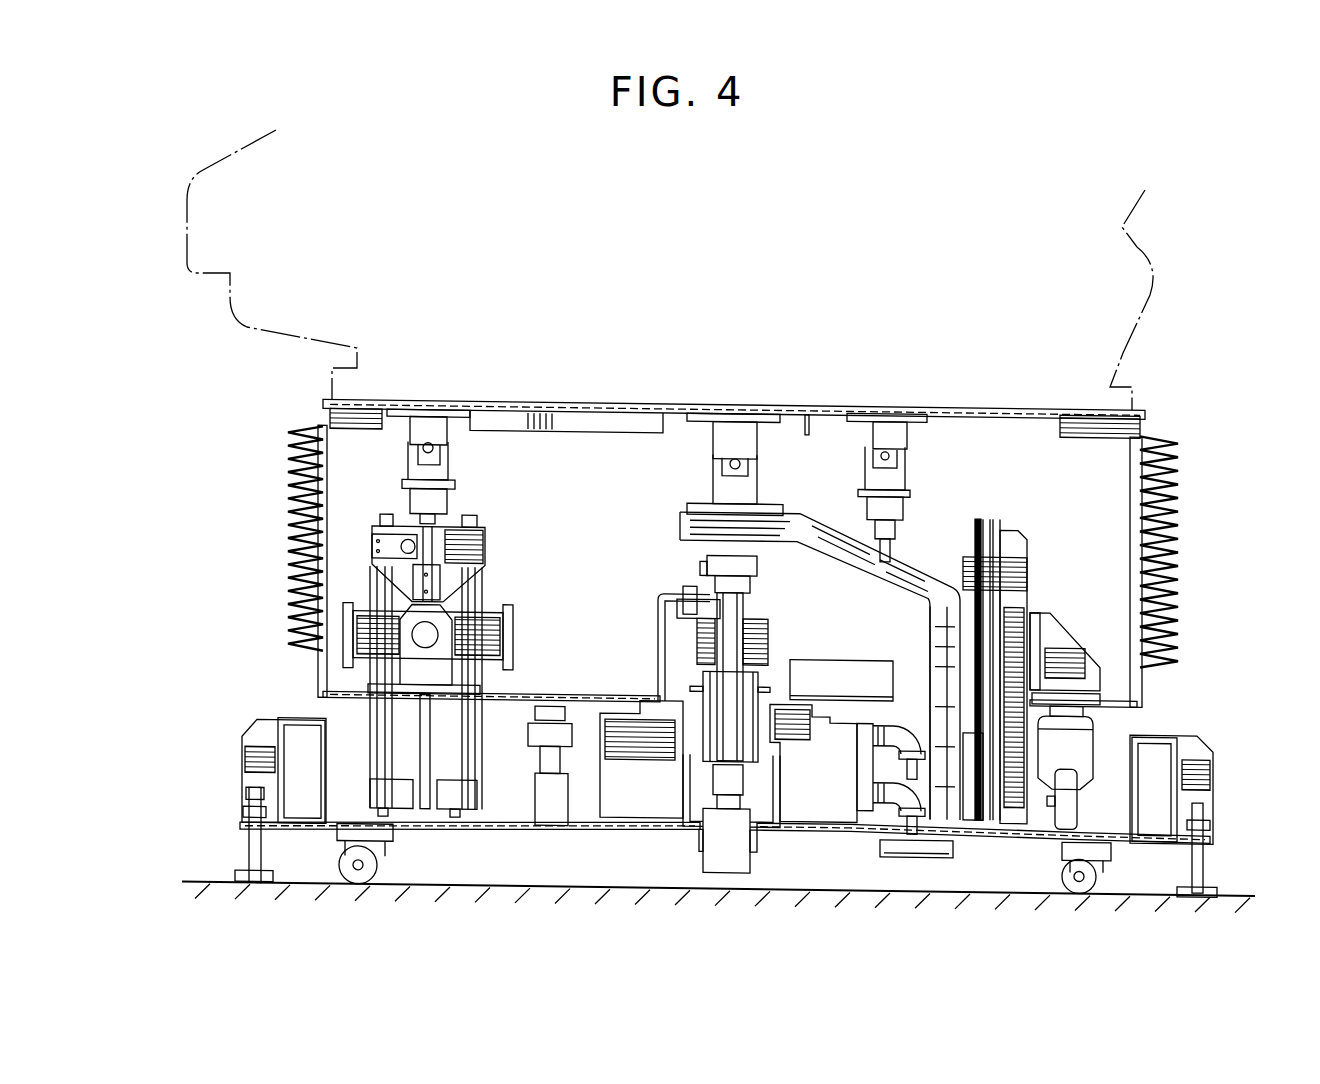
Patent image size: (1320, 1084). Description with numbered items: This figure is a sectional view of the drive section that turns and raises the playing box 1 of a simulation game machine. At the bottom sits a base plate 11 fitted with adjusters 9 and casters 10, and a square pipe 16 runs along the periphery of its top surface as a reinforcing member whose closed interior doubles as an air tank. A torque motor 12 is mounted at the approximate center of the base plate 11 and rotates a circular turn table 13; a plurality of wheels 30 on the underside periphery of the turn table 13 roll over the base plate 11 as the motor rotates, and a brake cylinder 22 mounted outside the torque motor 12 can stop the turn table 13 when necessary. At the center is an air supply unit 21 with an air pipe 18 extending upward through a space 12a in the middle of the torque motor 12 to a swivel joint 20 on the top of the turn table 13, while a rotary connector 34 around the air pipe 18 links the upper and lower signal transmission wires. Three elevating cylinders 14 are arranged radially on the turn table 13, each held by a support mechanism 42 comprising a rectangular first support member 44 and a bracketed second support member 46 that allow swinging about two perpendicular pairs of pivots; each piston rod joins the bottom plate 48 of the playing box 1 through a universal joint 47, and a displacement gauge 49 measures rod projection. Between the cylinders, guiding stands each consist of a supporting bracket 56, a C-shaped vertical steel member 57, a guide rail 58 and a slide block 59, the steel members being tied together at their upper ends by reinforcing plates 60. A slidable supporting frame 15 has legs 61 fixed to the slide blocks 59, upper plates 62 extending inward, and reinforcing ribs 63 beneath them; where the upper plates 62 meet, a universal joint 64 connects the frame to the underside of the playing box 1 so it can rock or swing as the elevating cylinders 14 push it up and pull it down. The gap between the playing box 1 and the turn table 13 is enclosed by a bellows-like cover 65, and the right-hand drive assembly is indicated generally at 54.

The playing box 1 is at (1143, 313).
The adjusters 9 is at (248, 852).
The casters 10 is at (340, 866).
The base plate 11 is at (503, 832).
The torque motor 12 is at (628, 823).
The space 12a is at (697, 810).
The turn table 13 is at (590, 691).
The elevating cylinders 14 is at (490, 542).
The slidable supporting frame 15 is at (820, 504).
The square pipe 16 is at (272, 728).
The air pipe 18 is at (660, 594).
The swivel joint 20 is at (707, 572).
The air supply unit 21 is at (765, 839).
The brake cylinder 22 is at (523, 765).
The wheels 30 is at (1078, 816).
The rotary connector 34 is at (768, 630).
The support mechanism 42 is at (525, 617).
The first support member 44 is at (490, 608).
The second support member 46 is at (395, 628).
The universal joint 47 is at (450, 458).
The bottom plate 48 is at (990, 410).
The displacement gauge 49 is at (400, 508).
The right drive unit 54 is at (1026, 678).
The supporting bracket 56 is at (1060, 635).
The C-shaped vertical steel member 57 is at (1018, 533).
The guide rail 58 is at (985, 513).
The slide block 59 is at (985, 813).
The reinforcing plates 60 is at (968, 548).
The legs 61 is at (930, 653).
The upper plates 62 is at (830, 536).
The reinforcing ribs 63 is at (870, 569).
The universal joint 64 is at (715, 462).
The bellows-like cover 65 is at (295, 520).